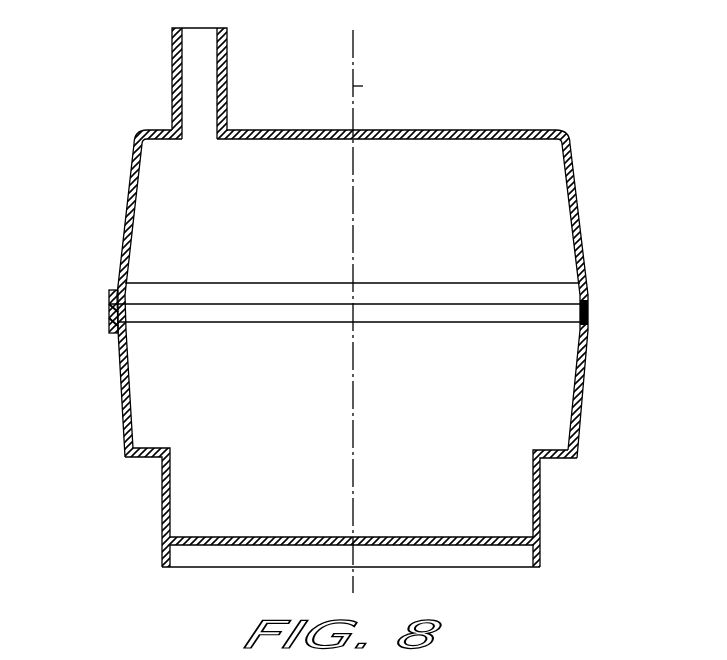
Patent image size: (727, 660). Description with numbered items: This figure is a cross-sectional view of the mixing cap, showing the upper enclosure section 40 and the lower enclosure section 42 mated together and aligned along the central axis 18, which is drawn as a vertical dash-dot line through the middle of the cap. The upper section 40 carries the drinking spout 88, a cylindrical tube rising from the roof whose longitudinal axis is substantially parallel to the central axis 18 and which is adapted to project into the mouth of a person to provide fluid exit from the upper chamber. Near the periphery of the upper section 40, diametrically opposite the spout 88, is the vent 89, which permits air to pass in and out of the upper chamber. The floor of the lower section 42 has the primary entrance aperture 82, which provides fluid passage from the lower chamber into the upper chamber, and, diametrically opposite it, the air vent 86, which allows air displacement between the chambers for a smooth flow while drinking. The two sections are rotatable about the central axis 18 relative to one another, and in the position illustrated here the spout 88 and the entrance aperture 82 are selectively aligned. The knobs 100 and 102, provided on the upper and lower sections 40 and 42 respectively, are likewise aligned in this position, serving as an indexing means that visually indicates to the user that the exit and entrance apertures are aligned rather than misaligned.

The central axis 18 is at (368, 80).
The upper enclosure section 40 is at (578, 210).
The lower enclosure section 42 is at (580, 413).
The primary entrance aperture 82 is at (196, 540).
The air vent 86 is at (508, 545).
The drinking spout 88 is at (228, 60).
The vent 89 is at (512, 130).
The knob 100 is at (110, 302).
The knob 102 is at (108, 325).